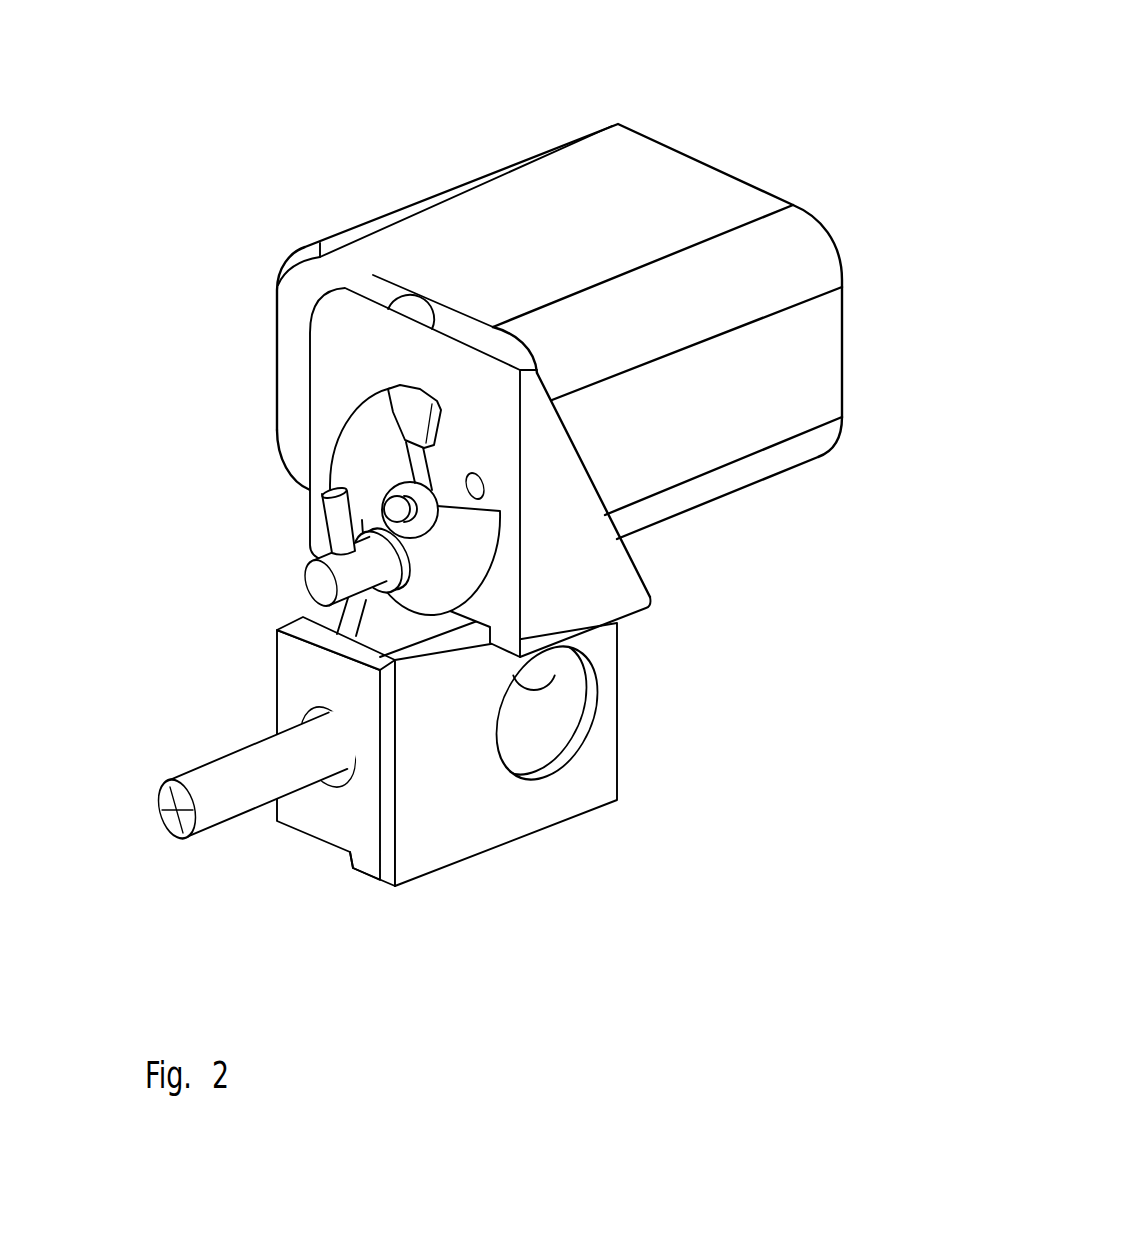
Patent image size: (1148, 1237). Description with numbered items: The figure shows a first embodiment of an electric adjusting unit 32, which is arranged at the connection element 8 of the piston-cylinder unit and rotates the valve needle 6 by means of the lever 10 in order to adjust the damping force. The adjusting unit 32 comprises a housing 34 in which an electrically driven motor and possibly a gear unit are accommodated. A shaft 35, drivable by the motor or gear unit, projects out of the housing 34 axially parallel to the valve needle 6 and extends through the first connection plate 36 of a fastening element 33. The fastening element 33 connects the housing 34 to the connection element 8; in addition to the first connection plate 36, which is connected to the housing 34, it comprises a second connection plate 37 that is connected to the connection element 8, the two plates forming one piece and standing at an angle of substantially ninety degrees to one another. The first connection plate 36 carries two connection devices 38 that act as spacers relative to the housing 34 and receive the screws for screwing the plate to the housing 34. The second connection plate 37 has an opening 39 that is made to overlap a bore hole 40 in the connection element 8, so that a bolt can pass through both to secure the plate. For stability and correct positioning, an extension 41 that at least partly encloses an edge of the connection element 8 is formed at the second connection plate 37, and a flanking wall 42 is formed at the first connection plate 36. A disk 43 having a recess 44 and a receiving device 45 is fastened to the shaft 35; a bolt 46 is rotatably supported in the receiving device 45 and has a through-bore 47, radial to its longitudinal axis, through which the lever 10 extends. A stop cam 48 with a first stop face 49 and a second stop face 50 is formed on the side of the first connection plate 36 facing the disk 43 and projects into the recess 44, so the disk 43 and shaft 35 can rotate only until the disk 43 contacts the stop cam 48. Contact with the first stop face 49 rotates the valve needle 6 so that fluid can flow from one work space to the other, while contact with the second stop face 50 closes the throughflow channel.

The adjusting unit 32 is at (738, 78).
The housing 34 is at (703, 193).
The second stop face 50 is at (302, 327).
The first connection plate 36 is at (325, 395).
The connection devices 38 is at (407, 297).
The stop cam 48 is at (405, 415).
The disk 43 is at (342, 440).
The shaft 35 is at (388, 482).
The receiving device 45 is at (390, 513).
The lever 10 is at (342, 533).
The through-bore 47 is at (345, 558).
The bolt 46 is at (312, 592).
The first stop face 49 is at (443, 430).
The flanking wall 42 is at (617, 595).
The recess 44 is at (640, 578).
The fastening element 33 is at (494, 797).
The second connection plate 37 is at (503, 818).
The connection element 8 is at (298, 683).
The extension 41 is at (375, 870).
The opening 39 is at (587, 718).
The bore hole 40 is at (537, 733).
The valve needle 6 is at (233, 788).